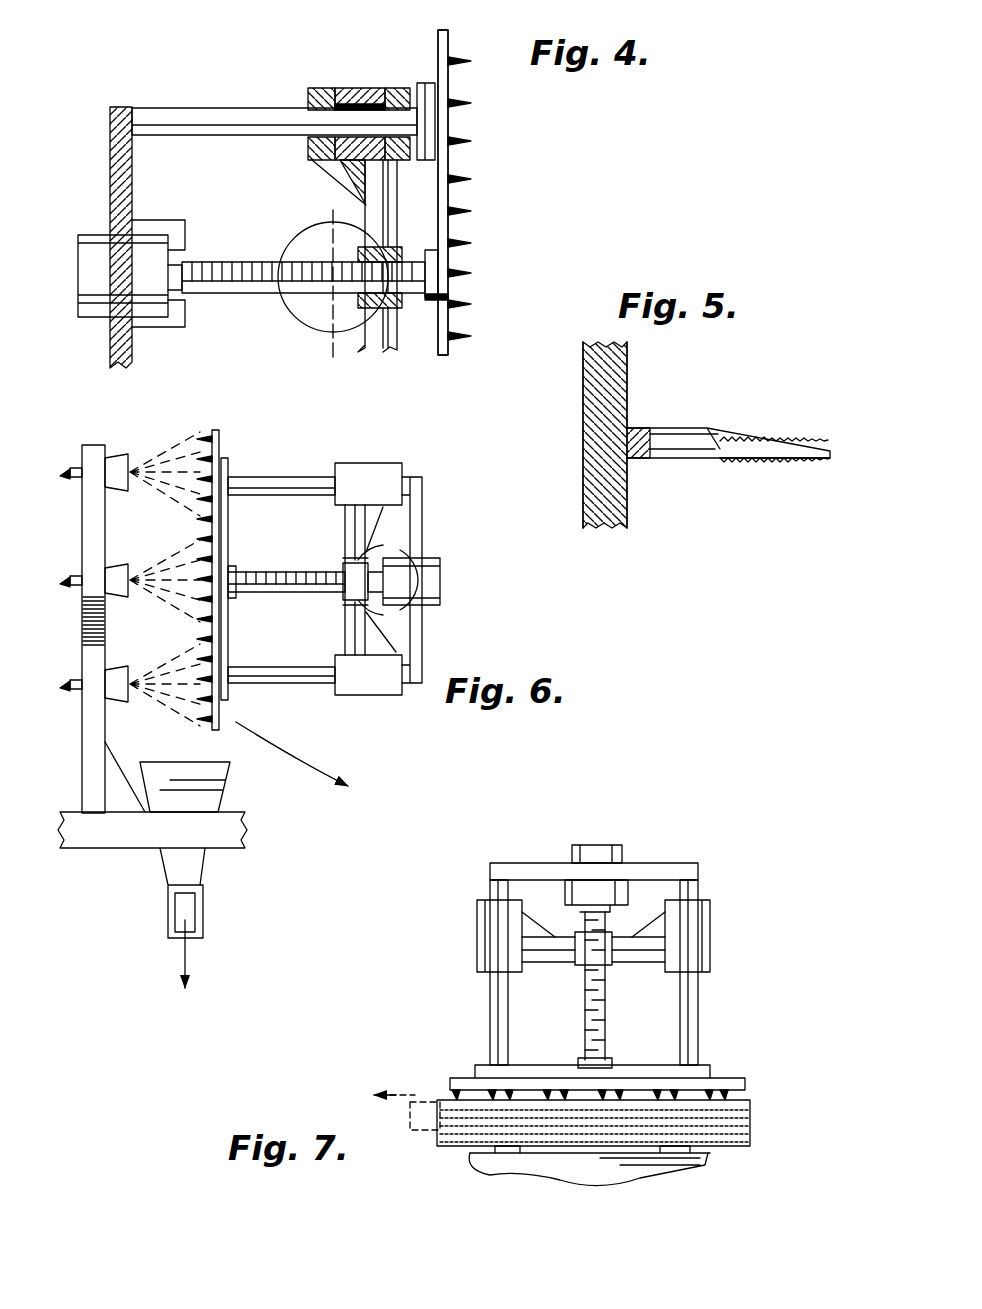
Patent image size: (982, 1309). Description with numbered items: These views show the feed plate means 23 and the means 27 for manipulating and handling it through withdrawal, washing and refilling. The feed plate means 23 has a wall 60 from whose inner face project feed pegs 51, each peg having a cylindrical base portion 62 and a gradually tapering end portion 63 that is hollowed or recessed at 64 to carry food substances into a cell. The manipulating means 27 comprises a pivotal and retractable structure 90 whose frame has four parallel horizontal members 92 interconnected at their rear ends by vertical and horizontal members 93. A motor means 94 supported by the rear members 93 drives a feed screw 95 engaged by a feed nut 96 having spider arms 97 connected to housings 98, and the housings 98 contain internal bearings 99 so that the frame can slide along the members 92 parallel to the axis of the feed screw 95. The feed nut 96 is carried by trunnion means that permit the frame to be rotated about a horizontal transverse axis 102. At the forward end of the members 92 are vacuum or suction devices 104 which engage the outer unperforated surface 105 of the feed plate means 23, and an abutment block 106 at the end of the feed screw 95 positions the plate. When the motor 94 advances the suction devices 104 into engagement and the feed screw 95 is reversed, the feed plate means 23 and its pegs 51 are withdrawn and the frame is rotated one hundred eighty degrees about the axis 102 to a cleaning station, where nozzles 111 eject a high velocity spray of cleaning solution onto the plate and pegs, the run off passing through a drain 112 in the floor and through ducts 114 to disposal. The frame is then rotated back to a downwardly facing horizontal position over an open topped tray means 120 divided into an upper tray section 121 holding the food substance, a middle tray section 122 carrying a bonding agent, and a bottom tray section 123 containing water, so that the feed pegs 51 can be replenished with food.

In FIG. 4, the feed plate means 23 is at (464, 157).
In FIG. 5, the feed plate means 23 is at (634, 366).
In FIG. 6, the feed plate means 23 is at (224, 440).
In FIG. 7, the feed plate means 23 is at (446, 1075).
In FIG. 4, the means for manipulating and handling the feed plate means 27 is at (285, 96).
In FIG. 6, the means for manipulating and handling the feed plate means 27 is at (315, 466).
In FIG. 7, the means for manipulating and handling the feed plate means 27 is at (720, 1010).
In FIG. 4, the feed pegs 51 is at (466, 205).
In FIG. 5, the feed pegs 51 is at (690, 434).
In FIG. 6, the feed pegs 51 is at (200, 475).
In FIG. 7, the feed pegs 51 is at (532, 1086).
In FIG. 5, the wall 60 is at (596, 426).
In FIG. 5, the cylindrical base portion 62 is at (670, 460).
In FIG. 5, the tapering end portion 63 is at (766, 460).
In FIG. 5, the longitudinal recess 64 is at (740, 446).
In FIG. 4, the pivotal and retractable structure 90 is at (128, 99).
In FIG. 6, the pivotal and retractable structure 90 is at (458, 644).
In FIG. 7, the pivotal and retractable structure 90 is at (668, 858).
In FIG. 4, the horizontal members 92 is at (188, 118).
In FIG. 6, the horizontal members 92 is at (262, 478).
In FIG. 4, the vertical and horizontal members 93 is at (112, 181).
In FIG. 6, the vertical and horizontal members 93 is at (421, 500).
In FIG. 7, the vertical and horizontal members 93 is at (521, 865).
In FIG. 4, the motor means 94 is at (146, 246).
In FIG. 6, the motor means 94 is at (441, 580).
In FIG. 7, the motor means 94 is at (596, 850).
In FIG. 4, the feed screw 95 is at (222, 266).
In FIG. 6, the feed screw 95 is at (278, 574).
In FIG. 7, the feed screw 95 is at (606, 1032).
In FIG. 4, the feed nut 96 is at (398, 309).
In FIG. 6, the feed nut 96 is at (360, 560).
In FIG. 7, the feed nut 96 is at (598, 950).
In FIG. 4, the spider arms 97 is at (352, 188).
In FIG. 6, the spider arms 97 is at (350, 630).
In FIG. 7, the spider arms 97 is at (548, 964).
In FIG. 4, the housings 98 is at (352, 92).
In FIG. 6, the housings 98 is at (375, 470).
In FIG. 7, the housings 98 is at (488, 924).
In FIG. 4, the internal bearings 99 is at (322, 96).
In FIG. 4, the horizontal transverse axis 102 is at (300, 298).
In FIG. 6, the horizontal transverse axis 102 is at (385, 578).
In FIG. 4, the vacuum or suction devices 104 is at (433, 93).
In FIG. 4, the outer unperforated surface 105 is at (440, 32).
In FIG. 4, the abutment block 106 is at (437, 265).
In FIG. 6, the nozzles 111 is at (116, 565).
In FIG. 6, the drain 112 is at (214, 790).
In FIG. 6, the ducts 114 is at (165, 914).
In FIG. 7, the open topped tray means 120 is at (755, 1098).
In FIG. 7, the upper tray section 121 is at (750, 1112).
In FIG. 7, the middle tray section 122 is at (752, 1132).
In FIG. 7, the bottom tray section 123 is at (462, 1153).